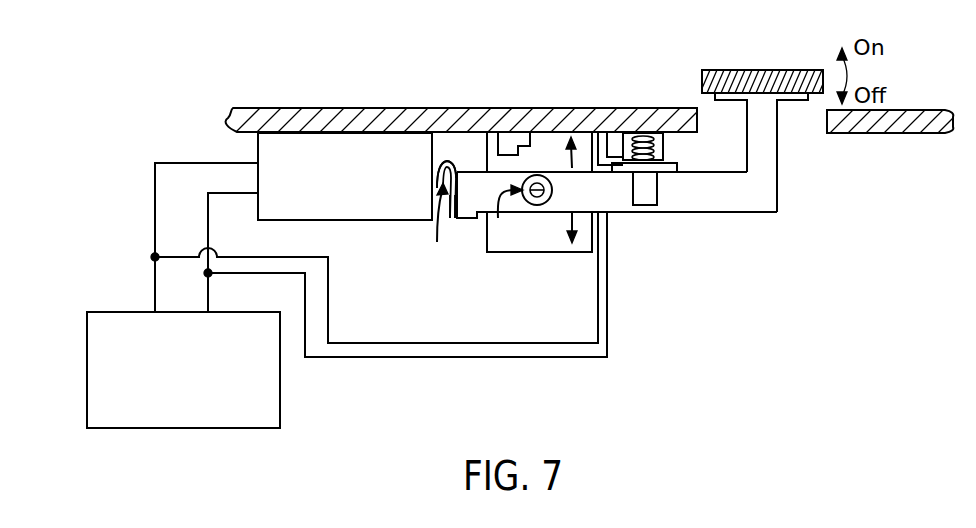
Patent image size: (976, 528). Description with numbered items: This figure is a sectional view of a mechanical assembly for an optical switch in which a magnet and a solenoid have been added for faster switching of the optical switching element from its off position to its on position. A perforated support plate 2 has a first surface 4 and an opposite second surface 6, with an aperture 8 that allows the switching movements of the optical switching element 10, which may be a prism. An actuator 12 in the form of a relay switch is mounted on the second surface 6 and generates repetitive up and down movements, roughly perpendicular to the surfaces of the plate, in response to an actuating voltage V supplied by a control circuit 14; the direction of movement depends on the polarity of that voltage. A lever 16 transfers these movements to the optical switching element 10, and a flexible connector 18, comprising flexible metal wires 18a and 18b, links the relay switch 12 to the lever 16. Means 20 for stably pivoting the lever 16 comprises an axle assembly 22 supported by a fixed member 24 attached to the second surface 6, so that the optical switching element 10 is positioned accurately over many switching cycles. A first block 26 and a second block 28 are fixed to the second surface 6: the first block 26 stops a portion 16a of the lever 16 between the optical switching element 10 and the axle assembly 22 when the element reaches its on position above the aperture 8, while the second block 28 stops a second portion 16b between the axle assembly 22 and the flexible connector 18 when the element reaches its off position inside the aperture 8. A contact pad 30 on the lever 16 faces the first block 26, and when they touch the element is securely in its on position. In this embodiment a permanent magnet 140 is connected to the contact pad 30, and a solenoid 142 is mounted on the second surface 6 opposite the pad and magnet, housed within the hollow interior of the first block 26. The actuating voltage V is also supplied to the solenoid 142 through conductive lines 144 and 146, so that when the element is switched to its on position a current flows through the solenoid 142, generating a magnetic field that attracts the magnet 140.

The perforated support plate 2 is at (333, 107).
The first surface 4 is at (485, 108).
The second surface 6 is at (657, 111).
The aperture 8 is at (798, 123).
The optical switching element 10 is at (725, 70).
The actuator 12 is at (371, 222).
The control circuit 14 is at (225, 418).
The lever 16 is at (713, 206).
The portion of the lever 16a is at (762, 163).
The second portion of the lever 16b is at (468, 220).
The flexible connector 18 is at (435, 216).
The flexible metal wire 18a is at (450, 160).
The flexible metal wire 18b is at (450, 218).
The means for stably pivoting the lever 20 is at (506, 216).
The axle assembly 22 is at (553, 190).
The fixed member 24 is at (541, 251).
The first block 26 is at (665, 142).
The second block 28 is at (510, 145).
The contact pad 30 is at (663, 168).
The magnet 140 is at (643, 200).
The solenoid 142 is at (645, 140).
The conductive line 144 is at (363, 342).
The conductive line 146 is at (378, 358).